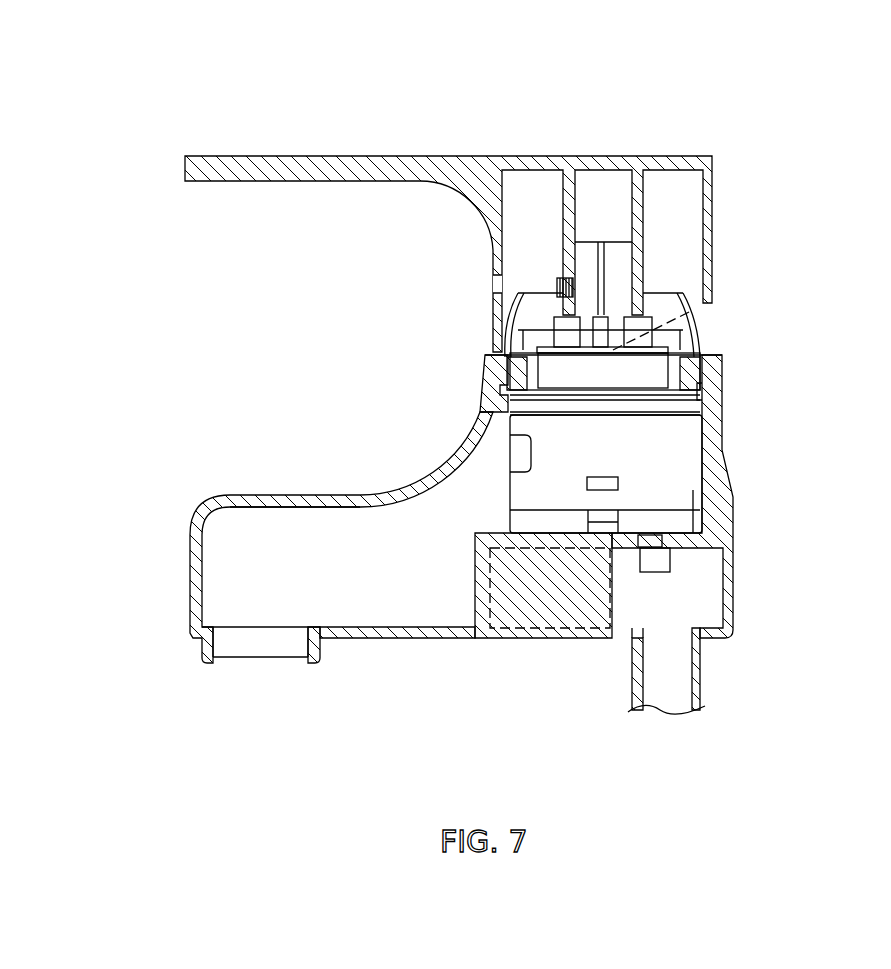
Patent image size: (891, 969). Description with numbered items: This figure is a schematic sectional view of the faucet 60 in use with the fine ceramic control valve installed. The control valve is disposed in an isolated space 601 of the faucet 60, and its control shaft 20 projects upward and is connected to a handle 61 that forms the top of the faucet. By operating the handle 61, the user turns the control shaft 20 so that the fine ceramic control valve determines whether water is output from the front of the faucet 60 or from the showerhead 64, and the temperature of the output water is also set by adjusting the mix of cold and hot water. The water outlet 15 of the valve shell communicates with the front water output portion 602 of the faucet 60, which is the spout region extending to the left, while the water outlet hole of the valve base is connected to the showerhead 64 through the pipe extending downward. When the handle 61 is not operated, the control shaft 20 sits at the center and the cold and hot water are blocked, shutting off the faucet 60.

The handle 61 is at (313, 163).
The control shaft 20 is at (624, 261).
The water outlet 15 is at (515, 458).
The faucet 60 is at (221, 488).
The isolated space 601 is at (722, 453).
The front water output portion 602 is at (227, 597).
The showerhead 64 is at (670, 675).